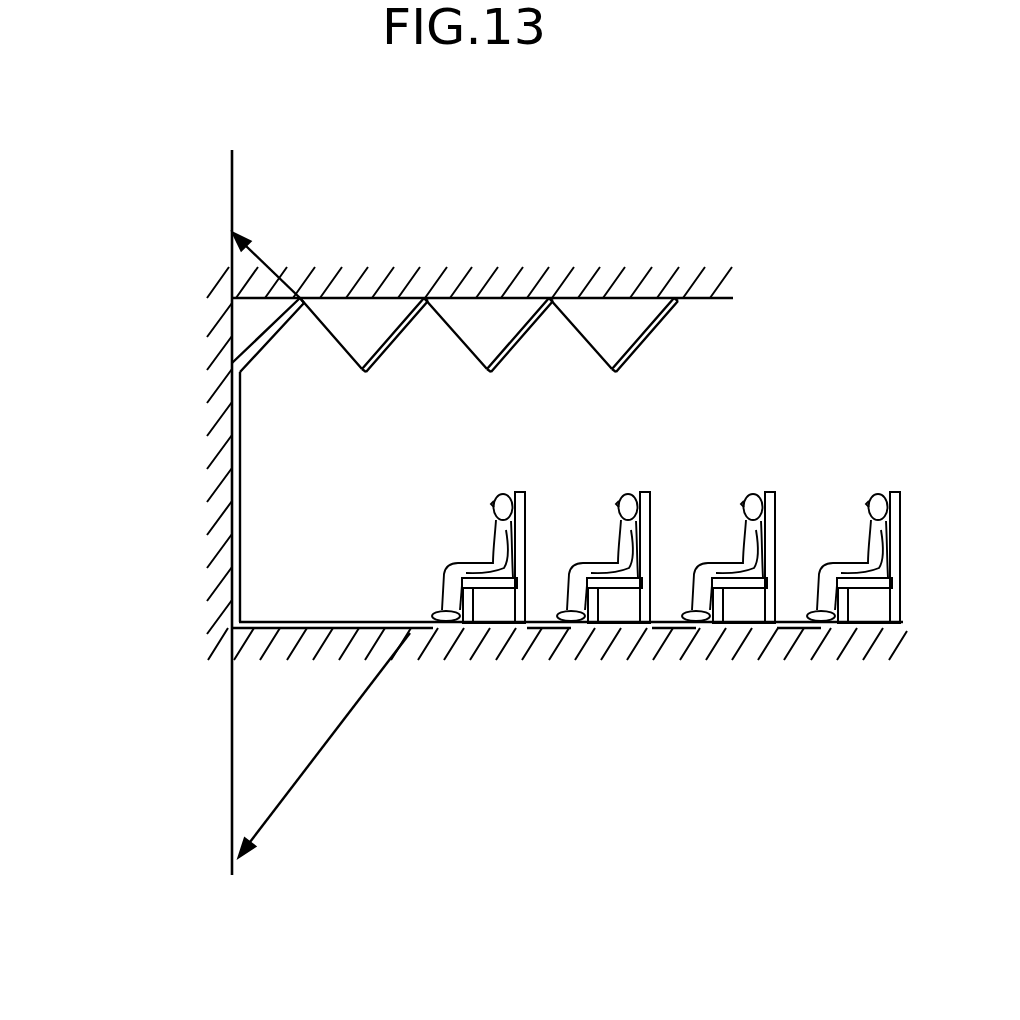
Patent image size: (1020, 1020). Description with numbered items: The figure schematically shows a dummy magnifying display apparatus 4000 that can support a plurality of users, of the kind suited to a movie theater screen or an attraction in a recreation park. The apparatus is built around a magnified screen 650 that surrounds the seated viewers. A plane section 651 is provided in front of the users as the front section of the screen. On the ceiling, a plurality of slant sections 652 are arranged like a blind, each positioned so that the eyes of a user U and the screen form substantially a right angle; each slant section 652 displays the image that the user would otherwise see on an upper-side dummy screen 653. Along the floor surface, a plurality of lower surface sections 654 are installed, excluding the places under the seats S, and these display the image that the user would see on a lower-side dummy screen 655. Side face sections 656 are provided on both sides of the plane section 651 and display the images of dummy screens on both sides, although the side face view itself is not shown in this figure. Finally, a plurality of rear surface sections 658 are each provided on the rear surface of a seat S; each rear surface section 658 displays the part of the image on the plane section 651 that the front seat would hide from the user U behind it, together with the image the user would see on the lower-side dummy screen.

The dummy magnifying display apparatus 4000 is at (117, 448).
The magnified screen 650 is at (186, 530).
The plane section 651 is at (232, 590).
The slant sections 652 is at (270, 323).
The upper-side dummy screen 653 is at (232, 206).
The lower surface sections 654 is at (309, 632).
The lower-side dummy screen 655 is at (232, 733).
The side face sections 656 is at (278, 416).
The rear surface sections 658 is at (498, 602).
The user U is at (505, 493).
The seat S is at (463, 622).